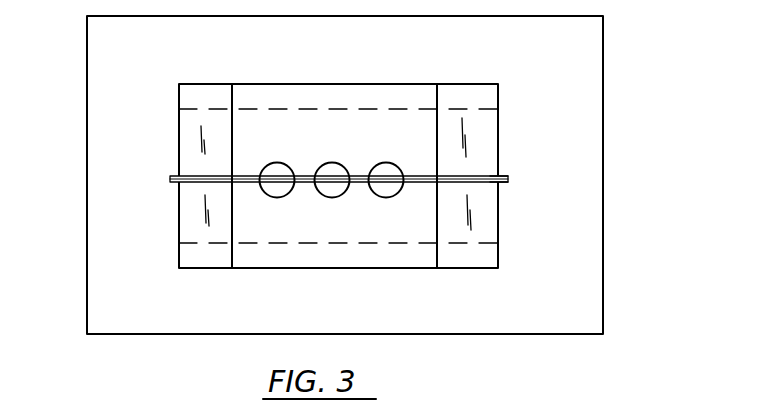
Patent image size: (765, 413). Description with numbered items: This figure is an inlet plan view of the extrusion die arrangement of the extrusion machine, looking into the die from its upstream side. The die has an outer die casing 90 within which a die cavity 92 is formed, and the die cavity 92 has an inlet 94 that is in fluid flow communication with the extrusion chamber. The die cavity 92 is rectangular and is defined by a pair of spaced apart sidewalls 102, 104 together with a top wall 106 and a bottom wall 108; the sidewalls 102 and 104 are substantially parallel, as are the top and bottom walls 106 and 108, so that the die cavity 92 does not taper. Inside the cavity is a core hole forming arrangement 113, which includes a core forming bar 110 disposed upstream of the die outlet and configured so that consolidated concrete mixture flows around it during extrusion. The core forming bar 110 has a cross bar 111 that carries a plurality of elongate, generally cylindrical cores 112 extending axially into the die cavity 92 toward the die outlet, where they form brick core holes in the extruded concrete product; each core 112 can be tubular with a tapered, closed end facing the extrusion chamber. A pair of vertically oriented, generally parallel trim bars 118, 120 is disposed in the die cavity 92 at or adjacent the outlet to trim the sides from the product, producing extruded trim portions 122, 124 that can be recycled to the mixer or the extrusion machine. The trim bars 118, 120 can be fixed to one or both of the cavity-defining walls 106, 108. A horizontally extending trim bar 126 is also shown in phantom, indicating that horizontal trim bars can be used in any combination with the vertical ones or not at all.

The outer die casing 90 is at (603, 68).
The die cavity 92 is at (187, 272).
The inlet 94 is at (410, 278).
The sidewall 102 is at (179, 117).
The sidewall 104 is at (498, 141).
The top wall 106 is at (298, 85).
The bottom wall 108 is at (273, 269).
The core forming bar 110 is at (178, 185).
The cross bar 111 is at (505, 184).
The cores 112 is at (373, 168).
The core hole forming arrangement 113 is at (412, 217).
The trim bar 118 is at (232, 99).
The trim bar 120 is at (440, 108).
The extruded trim portion 122 is at (200, 142).
The extruded trim portion 124 is at (467, 129).
The trim bar 126 is at (356, 100).